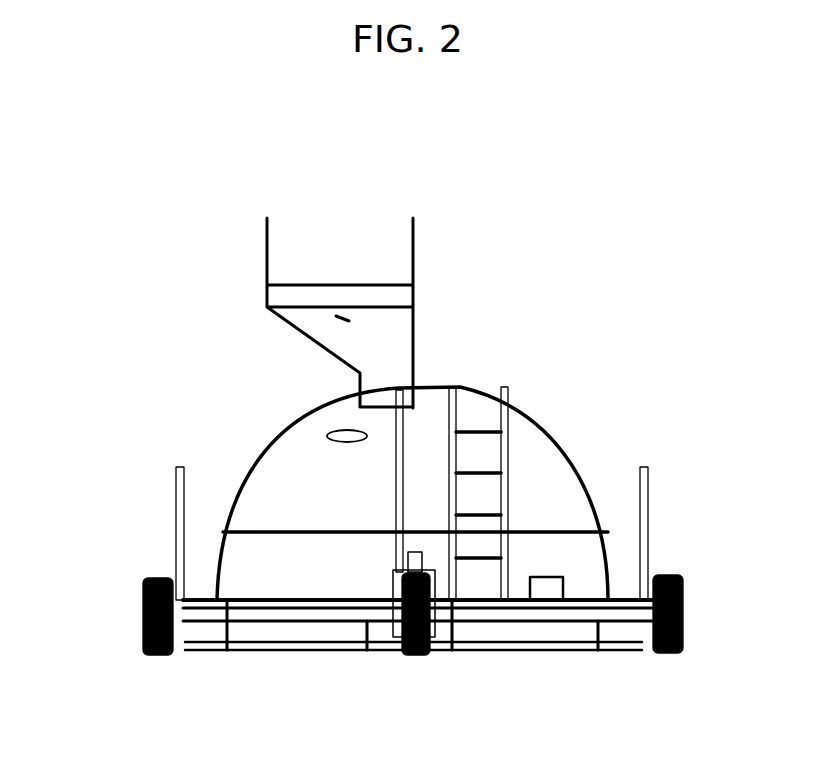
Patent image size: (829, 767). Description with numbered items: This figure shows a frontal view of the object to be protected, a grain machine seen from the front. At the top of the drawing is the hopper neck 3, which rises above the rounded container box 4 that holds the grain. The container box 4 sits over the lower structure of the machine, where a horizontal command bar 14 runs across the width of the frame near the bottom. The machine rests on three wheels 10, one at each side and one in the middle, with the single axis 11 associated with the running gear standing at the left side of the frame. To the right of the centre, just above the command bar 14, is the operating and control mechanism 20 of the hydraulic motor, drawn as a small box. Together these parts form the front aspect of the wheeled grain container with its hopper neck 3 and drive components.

The hopper neck 3 is at (410, 340).
The container box 4 is at (283, 432).
The wheels 10 is at (142, 603).
The single axis 11 is at (175, 597).
The command bar 14 is at (297, 602).
The operating and control mechanism of the hydraulic motor 20 is at (545, 590).